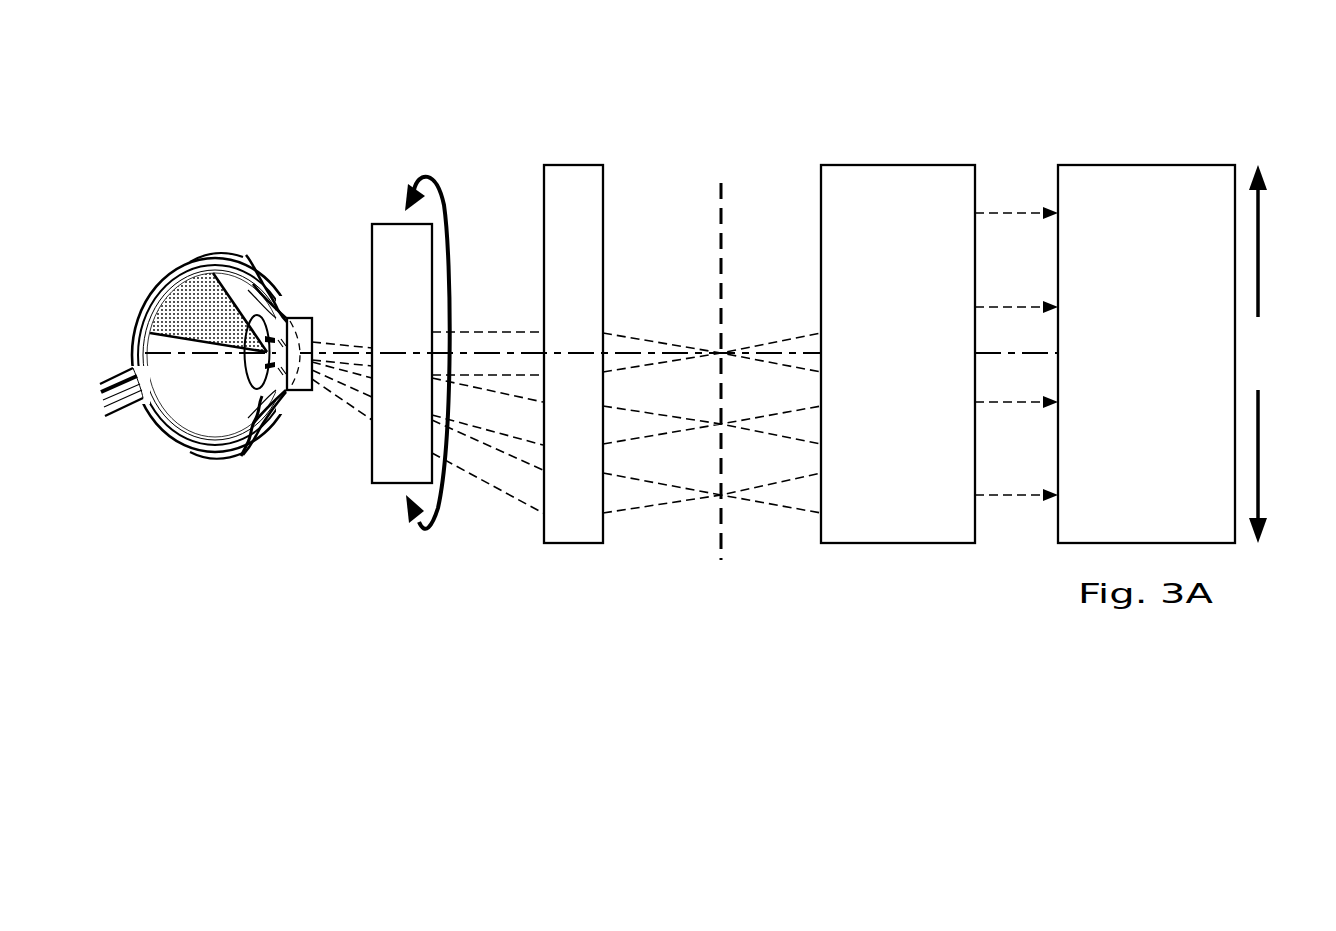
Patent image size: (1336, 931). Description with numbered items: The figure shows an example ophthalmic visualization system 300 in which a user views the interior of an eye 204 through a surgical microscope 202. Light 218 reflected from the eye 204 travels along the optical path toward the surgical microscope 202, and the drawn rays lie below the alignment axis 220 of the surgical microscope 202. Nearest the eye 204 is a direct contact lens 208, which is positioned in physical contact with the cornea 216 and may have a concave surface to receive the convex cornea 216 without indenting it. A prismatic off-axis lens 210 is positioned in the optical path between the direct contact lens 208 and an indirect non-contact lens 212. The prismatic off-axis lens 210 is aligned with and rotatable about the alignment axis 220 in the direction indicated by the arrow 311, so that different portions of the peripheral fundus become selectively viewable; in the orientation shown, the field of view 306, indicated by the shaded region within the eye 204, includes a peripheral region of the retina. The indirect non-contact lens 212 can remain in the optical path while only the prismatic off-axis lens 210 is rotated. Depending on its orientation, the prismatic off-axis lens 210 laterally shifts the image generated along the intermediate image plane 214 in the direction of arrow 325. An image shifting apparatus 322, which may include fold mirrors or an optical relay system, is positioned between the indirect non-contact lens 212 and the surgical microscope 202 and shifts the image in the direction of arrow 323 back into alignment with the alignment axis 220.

The ophthalmic visualization system 300 is at (332, 90).
The eye 204 is at (150, 445).
The field of view 306 is at (182, 298).
The cornea 216 is at (296, 318).
The direct contact lens 208 is at (308, 391).
The prismatic off-axis lens 210 is at (372, 467).
The arrow 311 is at (422, 176).
The indirect non-contact lens 212 is at (572, 165).
The intermediate image plane 214 is at (723, 193).
The light 218 is at (500, 492).
The alignment axis 220 is at (522, 350).
The image shifting apparatus 322 is at (920, 367).
The surgical microscope 202 is at (1168, 367).
The arrow 323 is at (1261, 258).
The arrow 325 is at (1261, 453).